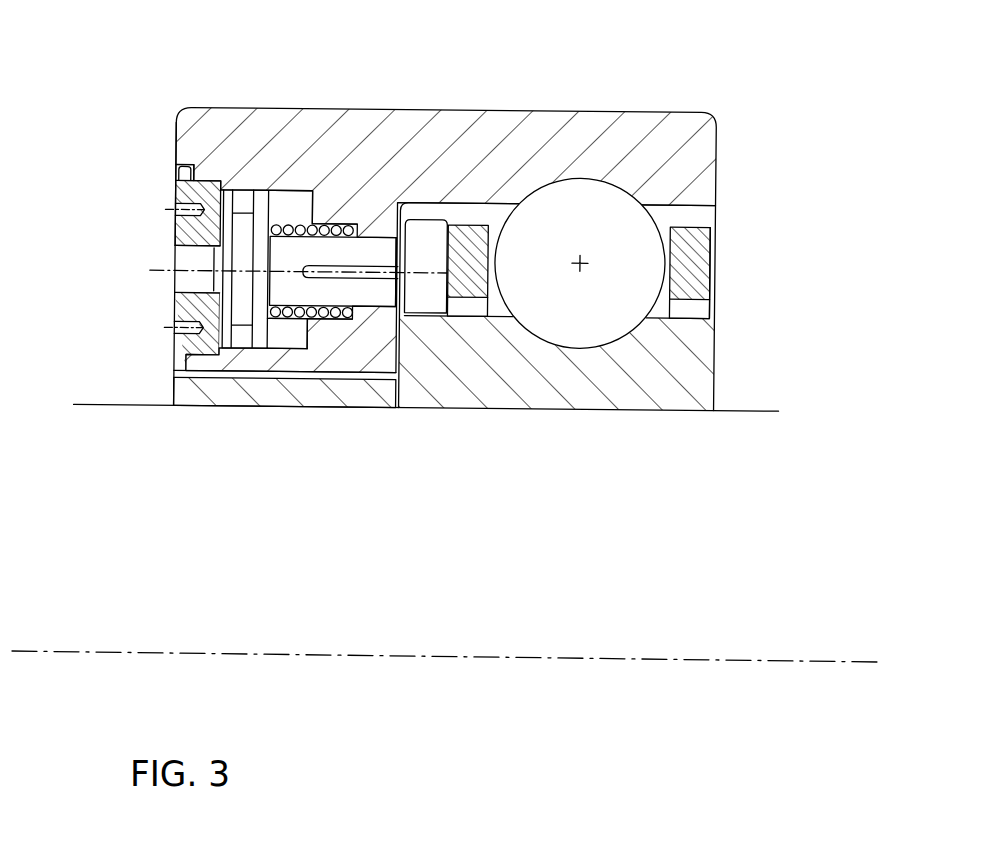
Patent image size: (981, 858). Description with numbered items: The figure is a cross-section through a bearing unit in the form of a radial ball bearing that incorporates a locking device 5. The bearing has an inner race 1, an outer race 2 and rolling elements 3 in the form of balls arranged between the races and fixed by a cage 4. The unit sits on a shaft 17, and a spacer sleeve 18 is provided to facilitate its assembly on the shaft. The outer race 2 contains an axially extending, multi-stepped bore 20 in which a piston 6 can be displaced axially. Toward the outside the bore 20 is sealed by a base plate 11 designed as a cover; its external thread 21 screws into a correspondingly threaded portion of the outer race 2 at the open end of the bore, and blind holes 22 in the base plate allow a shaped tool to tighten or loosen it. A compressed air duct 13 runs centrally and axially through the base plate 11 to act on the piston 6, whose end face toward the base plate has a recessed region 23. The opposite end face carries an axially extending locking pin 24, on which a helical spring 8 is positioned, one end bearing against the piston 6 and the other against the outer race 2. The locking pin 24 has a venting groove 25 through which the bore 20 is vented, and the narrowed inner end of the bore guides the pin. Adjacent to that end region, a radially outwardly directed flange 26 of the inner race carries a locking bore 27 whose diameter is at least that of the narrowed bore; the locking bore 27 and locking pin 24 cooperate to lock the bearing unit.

The inner race 1 is at (672, 340).
The outer race 2 is at (687, 162).
The rolling elements 3 is at (620, 229).
The cage 4 is at (700, 264).
The locking device 5 is at (285, 333).
The piston 6 is at (245, 315).
The helical spring 8 is at (327, 228).
The base plate 11 is at (175, 185).
The compressed air duct 13 is at (197, 285).
The shaft 17 is at (693, 452).
The spacer sleeve 18 is at (307, 390).
The axially extending bore 20 is at (280, 210).
The external thread 21 is at (190, 193).
The blind holes 22 is at (175, 226).
The recessed region 23 is at (170, 273).
The locking pin 24 is at (363, 250).
The venting groove 25 is at (380, 272).
The flange 26 is at (423, 228).
The locking bore 27 is at (435, 255).